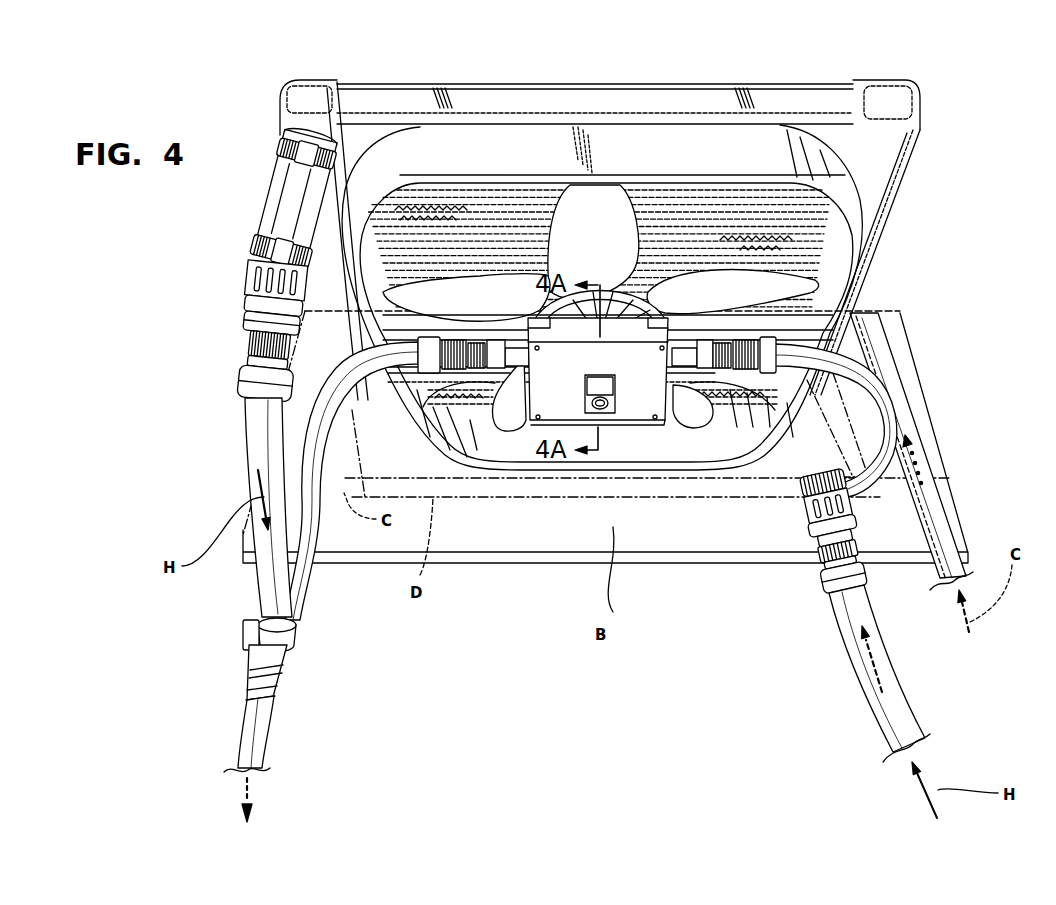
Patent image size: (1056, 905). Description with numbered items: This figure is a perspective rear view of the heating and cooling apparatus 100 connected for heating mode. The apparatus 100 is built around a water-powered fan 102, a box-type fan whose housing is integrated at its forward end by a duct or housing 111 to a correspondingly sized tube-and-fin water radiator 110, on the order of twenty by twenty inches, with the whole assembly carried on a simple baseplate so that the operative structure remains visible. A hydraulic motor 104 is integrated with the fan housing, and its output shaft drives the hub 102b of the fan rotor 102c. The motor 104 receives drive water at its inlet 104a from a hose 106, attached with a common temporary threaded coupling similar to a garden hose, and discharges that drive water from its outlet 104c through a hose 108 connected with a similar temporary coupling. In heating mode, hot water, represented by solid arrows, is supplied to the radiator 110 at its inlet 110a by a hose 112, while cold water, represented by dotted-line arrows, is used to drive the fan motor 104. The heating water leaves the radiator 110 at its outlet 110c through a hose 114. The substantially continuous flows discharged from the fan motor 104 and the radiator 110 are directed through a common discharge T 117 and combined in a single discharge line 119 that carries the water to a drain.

The heating and cooling apparatus 100 is at (932, 82).
The water-powered fan 102 is at (676, 140).
The hub 102b is at (641, 272).
The fan rotor 102c is at (618, 223).
The hydraulic motor 104 is at (543, 418).
The inlet 104a is at (682, 357).
The outlet 104c is at (518, 355).
The hose 106 is at (937, 518).
The hose 108 is at (331, 419).
The water radiator 110 is at (443, 217).
The inlet 110a is at (843, 500).
The outlet 110c is at (262, 279).
The duct or housing 111 is at (833, 128).
The hose 112 is at (893, 710).
The hose 114 is at (253, 423).
The common discharge T 117 is at (280, 662).
The single discharge line 119 is at (248, 732).